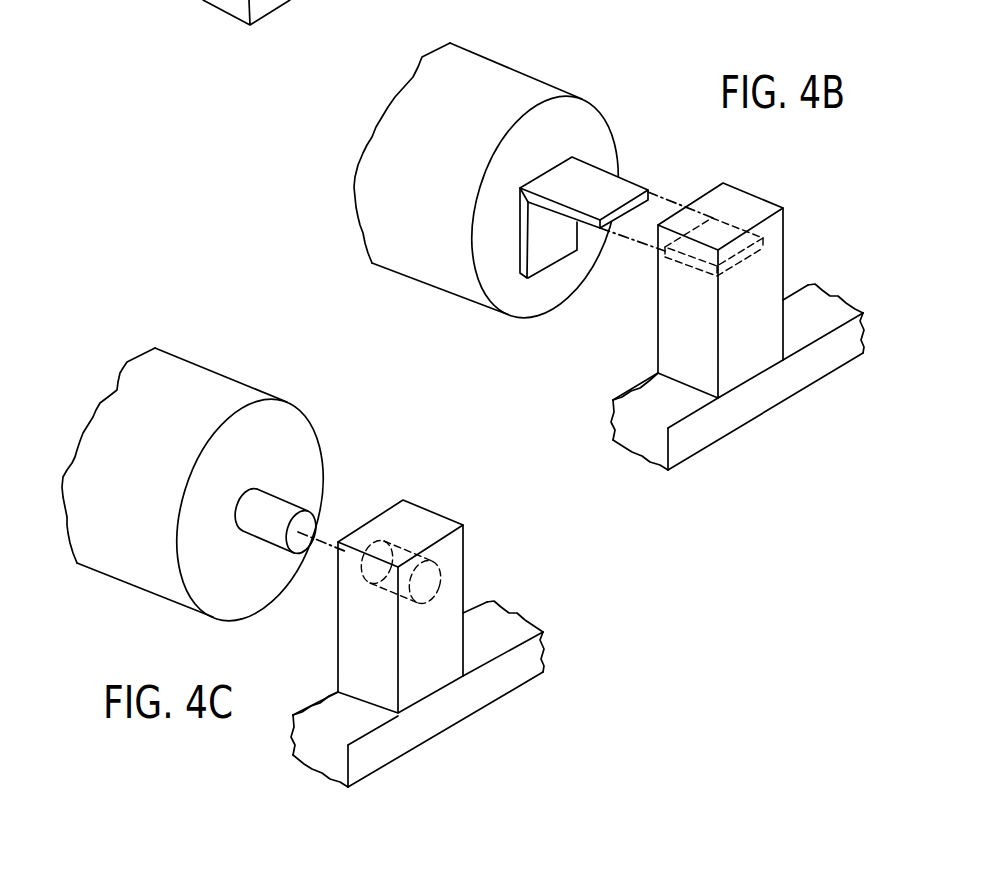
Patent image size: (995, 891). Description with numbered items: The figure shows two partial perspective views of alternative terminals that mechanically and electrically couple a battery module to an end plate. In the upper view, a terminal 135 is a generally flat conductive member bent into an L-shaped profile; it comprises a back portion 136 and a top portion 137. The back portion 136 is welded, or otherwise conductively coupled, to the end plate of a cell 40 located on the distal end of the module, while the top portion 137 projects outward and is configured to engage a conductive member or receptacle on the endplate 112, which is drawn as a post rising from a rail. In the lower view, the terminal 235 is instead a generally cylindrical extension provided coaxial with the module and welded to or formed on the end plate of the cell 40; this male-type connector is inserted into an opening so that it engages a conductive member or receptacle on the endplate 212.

In FIG. 4B, the cell 40 is at (488, 95).
In FIG. 4B, the terminal 135 is at (576, 179).
In FIG. 4B, the back portion 136 is at (540, 238).
In FIG. 4B, the top portion 137 is at (618, 185).
In FIG. 4B, the endplate 112 is at (830, 310).
In FIG. 4C, the terminal 235 is at (308, 522).
In FIG. 4C, the endplate 212 is at (510, 627).